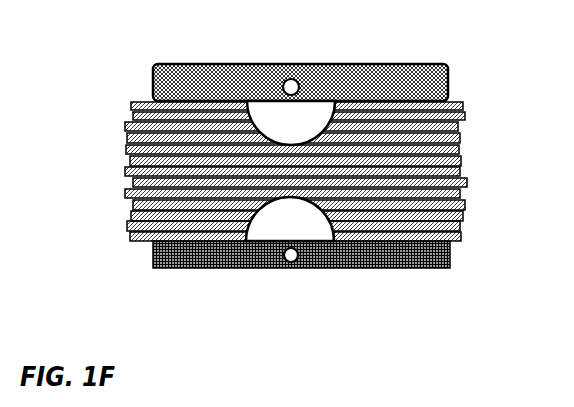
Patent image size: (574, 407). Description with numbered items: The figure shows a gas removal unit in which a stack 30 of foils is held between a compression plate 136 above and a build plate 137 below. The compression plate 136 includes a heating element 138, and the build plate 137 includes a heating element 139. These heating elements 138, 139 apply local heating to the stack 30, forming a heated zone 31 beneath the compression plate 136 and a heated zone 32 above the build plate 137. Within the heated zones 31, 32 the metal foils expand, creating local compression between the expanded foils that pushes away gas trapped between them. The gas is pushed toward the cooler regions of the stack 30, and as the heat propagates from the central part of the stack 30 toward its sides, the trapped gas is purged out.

The compression plate 136 is at (168, 70).
The heating element 138 is at (277, 72).
The heated zone 31 is at (285, 104).
The stack 30 is at (118, 141).
The build plate 137 is at (157, 246).
The heating element 139 is at (272, 255).
The heated zone 32 is at (294, 222).